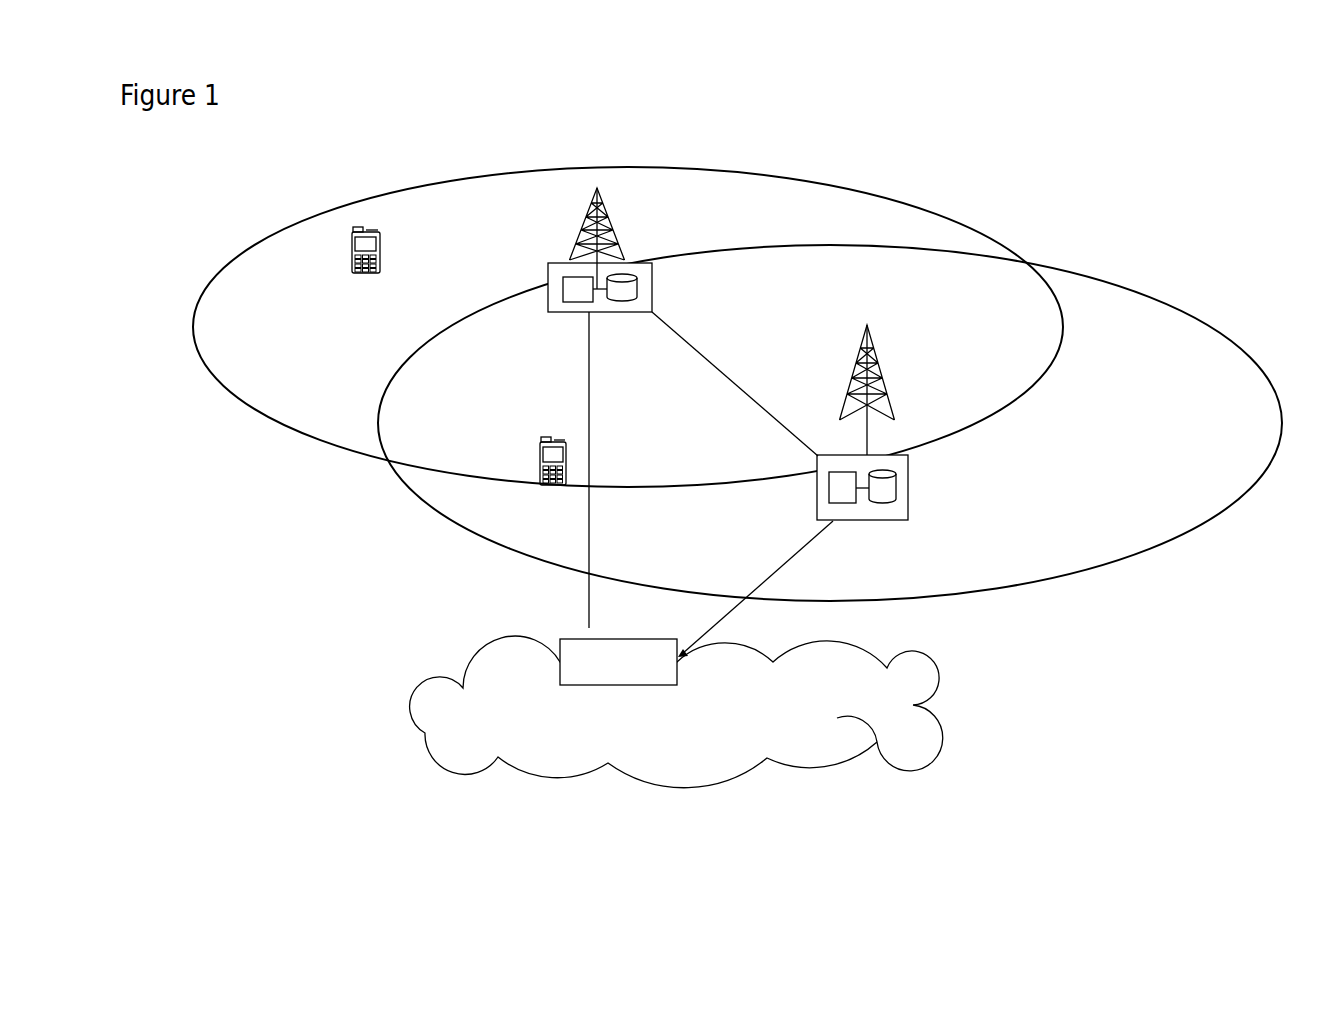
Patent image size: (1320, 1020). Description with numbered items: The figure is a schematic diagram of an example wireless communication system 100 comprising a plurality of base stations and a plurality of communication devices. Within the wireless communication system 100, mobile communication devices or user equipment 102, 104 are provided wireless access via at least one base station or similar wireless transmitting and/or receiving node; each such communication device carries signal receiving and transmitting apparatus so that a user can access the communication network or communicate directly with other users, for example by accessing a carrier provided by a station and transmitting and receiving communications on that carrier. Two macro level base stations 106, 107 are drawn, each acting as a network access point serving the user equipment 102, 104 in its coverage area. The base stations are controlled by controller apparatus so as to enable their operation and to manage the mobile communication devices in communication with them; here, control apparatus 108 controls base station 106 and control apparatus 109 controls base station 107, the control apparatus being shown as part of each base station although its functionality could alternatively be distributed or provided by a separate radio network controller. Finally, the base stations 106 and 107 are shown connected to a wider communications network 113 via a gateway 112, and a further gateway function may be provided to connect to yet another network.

The wireless communication system 100 is at (278, 212).
The user equipment 102 is at (350, 263).
The user equipment 104 is at (540, 463).
The macro level base station 106 is at (582, 232).
The macro level base station 107 is at (888, 390).
The control apparatus 108 is at (547, 277).
The control apparatus 109 is at (900, 512).
The gateway 112 is at (563, 640).
The wider communications network 113 is at (490, 693).